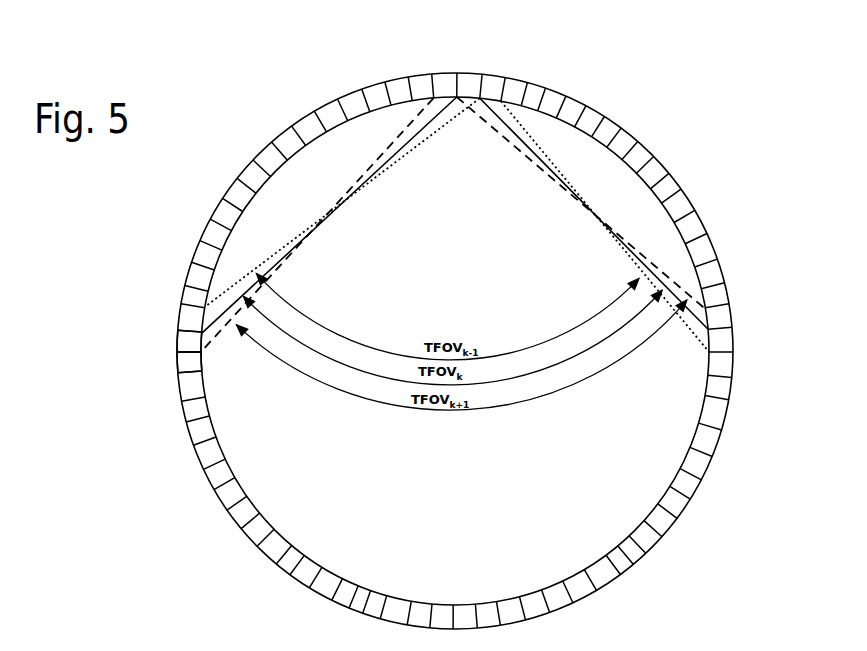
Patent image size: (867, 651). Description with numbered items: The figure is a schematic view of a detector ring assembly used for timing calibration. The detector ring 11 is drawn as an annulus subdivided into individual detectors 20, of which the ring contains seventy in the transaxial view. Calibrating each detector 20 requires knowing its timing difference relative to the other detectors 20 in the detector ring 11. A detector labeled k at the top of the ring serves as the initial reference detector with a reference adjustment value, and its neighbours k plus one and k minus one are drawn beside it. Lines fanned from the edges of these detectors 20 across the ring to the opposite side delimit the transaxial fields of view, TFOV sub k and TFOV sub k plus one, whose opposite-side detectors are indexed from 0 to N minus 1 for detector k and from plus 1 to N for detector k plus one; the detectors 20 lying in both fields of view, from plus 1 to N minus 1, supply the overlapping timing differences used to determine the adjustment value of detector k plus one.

The detector ring 11 is at (688, 90).
The detector 20 is at (677, 184).
The reference detector element 0 is at (189, 341).
The detector element + 1 is at (189, 362).